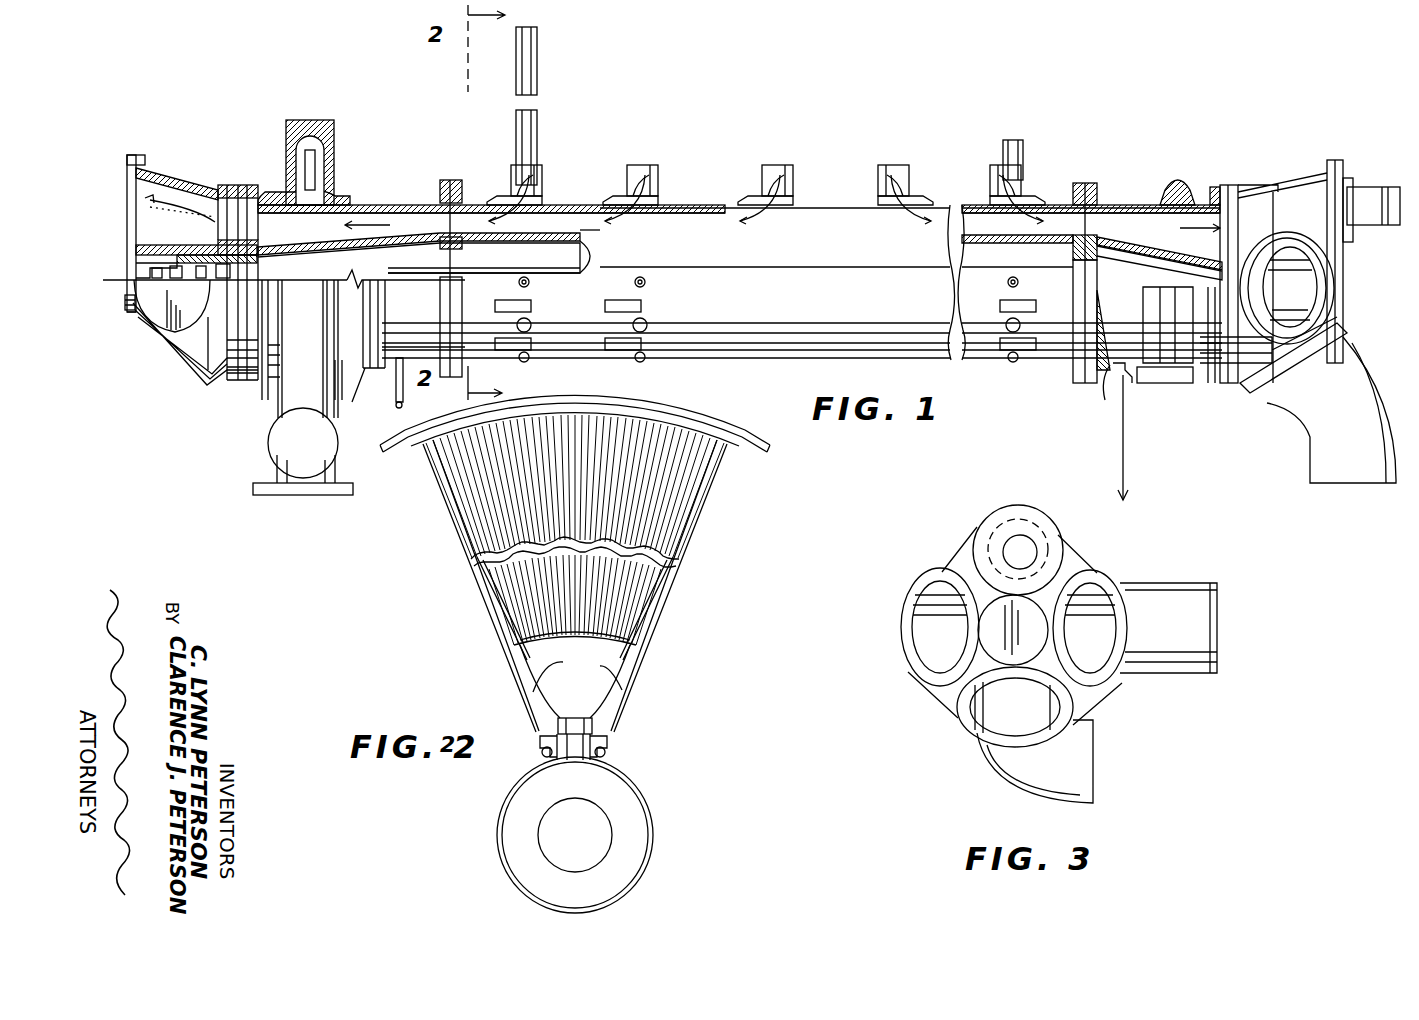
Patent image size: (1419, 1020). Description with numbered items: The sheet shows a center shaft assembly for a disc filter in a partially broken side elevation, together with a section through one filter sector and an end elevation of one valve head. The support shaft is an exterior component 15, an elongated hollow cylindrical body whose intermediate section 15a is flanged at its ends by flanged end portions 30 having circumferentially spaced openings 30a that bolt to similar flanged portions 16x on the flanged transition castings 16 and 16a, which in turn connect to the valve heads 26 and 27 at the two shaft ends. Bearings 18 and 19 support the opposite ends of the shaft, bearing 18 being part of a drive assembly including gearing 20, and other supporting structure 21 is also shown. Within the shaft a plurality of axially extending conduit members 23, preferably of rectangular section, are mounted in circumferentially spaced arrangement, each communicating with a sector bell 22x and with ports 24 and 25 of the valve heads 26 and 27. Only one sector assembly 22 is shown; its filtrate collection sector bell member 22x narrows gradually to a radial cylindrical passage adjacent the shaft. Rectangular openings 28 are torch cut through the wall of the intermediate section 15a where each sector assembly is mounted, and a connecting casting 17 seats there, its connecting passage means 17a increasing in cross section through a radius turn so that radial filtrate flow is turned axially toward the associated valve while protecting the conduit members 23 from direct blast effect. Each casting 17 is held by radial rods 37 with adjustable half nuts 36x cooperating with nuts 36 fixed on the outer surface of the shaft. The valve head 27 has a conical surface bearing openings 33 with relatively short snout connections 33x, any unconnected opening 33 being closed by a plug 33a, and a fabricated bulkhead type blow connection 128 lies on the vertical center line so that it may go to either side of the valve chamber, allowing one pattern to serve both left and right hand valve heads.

In FIG. 1, the exterior component 15 is at (1114, 372).
In FIG. 1, the intermediate section 15a is at (568, 203).
In FIG. 2, the intermediate section 15a is at (655, 850).
In FIG. 1, the flanged transition casting 16 is at (410, 205).
In FIG. 1, the flanged transition casting 16a is at (1098, 249).
In FIG. 1, the flanged portion 16x is at (445, 182).
In FIG. 1, the casting 17 is at (512, 175).
In FIG. 2, the casting 17 is at (600, 727).
In FIG. 1, the connecting passage means 17a is at (1040, 190).
In FIG. 1, the bearing 18 is at (352, 192).
In FIG. 1, the bearing 19 is at (1178, 178).
In FIG. 1, the gearing 20 is at (336, 128).
In FIG. 1, the supporting structure 21 is at (1130, 440).
In FIG. 1, the sector assembly 22 is at (540, 58).
In FIG. 2, the sector assembly 22 is at (700, 497).
In FIG. 1, the filtrate collection sector bell member 22x is at (1025, 148).
In FIG. 2, the filtrate collection sector bell member 22x is at (567, 667).
In FIG. 1, the conduit member 23 is at (535, 243).
In FIG. 2, the conduit member 23 is at (538, 790).
In FIG. 1, the port 24 is at (240, 228).
In FIG. 1, the port 25 is at (1225, 245).
In FIG. 1, the valve head 26 is at (205, 175).
In FIG. 1, the valve head 27 is at (1285, 185).
In FIG. 3, the valve head 27 is at (955, 545).
In FIG. 1, the rectangular opening 28 is at (600, 305).
In FIG. 1, the flanged end portion 30 is at (452, 180).
In FIG. 1, the opening 30a is at (522, 200).
In FIG. 3, the opening 33 is at (940, 642).
In FIG. 1, the plug 33a is at (1312, 304).
In FIG. 1, the snout connection 33x is at (1352, 416).
In FIG. 1, the nut 36 is at (648, 328).
In FIG. 2, the nut 36 is at (540, 750).
In FIG. 2, the adjustable nut 36x is at (618, 740).
In FIG. 2, the rod 37 is at (628, 695).
In FIG. 1, the blow connection 128 is at (1375, 188).
In FIG. 3, the blow connection 128 is at (1020, 545).